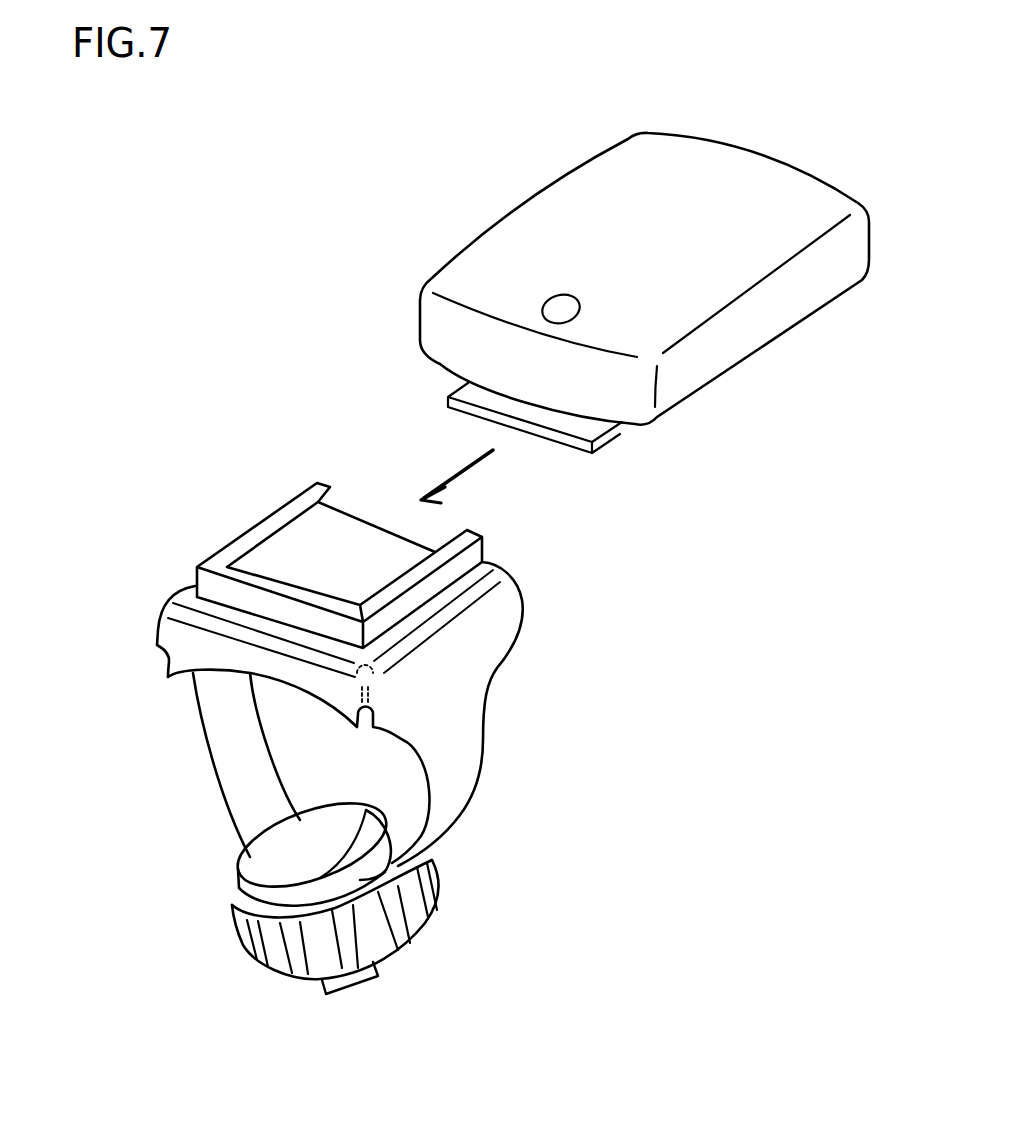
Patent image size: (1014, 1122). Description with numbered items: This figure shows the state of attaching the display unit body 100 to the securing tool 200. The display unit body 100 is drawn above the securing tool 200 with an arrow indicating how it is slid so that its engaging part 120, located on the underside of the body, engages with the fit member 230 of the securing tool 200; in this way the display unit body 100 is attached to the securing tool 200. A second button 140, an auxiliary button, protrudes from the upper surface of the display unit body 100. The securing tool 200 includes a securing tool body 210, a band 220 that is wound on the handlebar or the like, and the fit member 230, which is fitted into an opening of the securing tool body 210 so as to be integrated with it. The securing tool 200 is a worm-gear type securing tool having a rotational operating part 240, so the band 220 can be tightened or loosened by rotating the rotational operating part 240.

The display unit body 100 is at (587, 241).
The engaging part 120 is at (584, 431).
The second button 140 is at (548, 306).
The securing tool 200 is at (320, 748).
The securing tool body 210 is at (470, 600).
The band 220 is at (460, 775).
The fit member 230 is at (269, 523).
The rotational operating part 240 is at (377, 940).